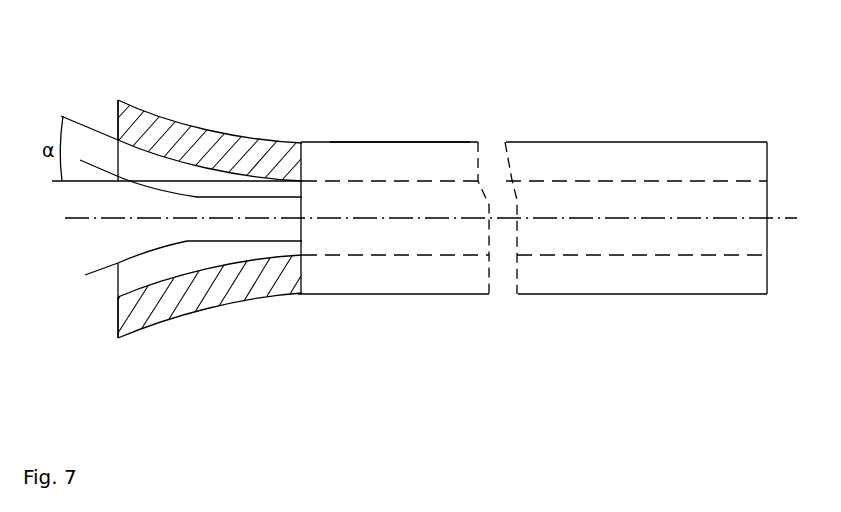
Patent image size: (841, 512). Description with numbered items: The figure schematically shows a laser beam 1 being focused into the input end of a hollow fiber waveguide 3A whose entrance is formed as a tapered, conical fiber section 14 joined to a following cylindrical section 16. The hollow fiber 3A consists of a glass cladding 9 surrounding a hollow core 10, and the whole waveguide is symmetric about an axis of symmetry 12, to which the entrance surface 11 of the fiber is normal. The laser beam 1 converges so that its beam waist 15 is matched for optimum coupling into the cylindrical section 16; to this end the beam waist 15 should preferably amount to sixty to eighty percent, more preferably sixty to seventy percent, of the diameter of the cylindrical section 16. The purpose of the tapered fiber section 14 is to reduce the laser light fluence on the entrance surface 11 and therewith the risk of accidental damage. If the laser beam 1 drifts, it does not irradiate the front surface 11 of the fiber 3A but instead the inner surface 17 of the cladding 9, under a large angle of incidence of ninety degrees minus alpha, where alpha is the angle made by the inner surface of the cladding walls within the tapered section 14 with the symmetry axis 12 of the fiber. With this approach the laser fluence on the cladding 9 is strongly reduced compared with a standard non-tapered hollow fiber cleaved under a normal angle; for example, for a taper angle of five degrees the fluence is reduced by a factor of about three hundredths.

The laser beam 1 is at (93, 262).
The glass cladding 9 is at (588, 280).
The hollow core 10 is at (437, 197).
The entrance surface 11 is at (118, 315).
The axis of symmetry 12 is at (785, 217).
The tapered fiber section 14 is at (180, 122).
The beam waist 15 is at (222, 240).
The cylindrical section 16 is at (382, 141).
The inner surface of the cladding 17 is at (145, 148).
The hollow fiber waveguide 3A is at (398, 296).